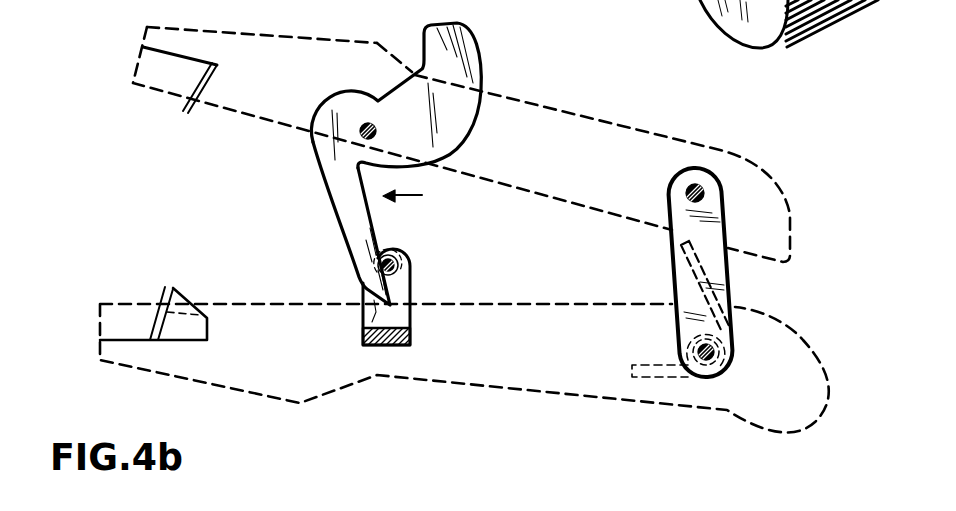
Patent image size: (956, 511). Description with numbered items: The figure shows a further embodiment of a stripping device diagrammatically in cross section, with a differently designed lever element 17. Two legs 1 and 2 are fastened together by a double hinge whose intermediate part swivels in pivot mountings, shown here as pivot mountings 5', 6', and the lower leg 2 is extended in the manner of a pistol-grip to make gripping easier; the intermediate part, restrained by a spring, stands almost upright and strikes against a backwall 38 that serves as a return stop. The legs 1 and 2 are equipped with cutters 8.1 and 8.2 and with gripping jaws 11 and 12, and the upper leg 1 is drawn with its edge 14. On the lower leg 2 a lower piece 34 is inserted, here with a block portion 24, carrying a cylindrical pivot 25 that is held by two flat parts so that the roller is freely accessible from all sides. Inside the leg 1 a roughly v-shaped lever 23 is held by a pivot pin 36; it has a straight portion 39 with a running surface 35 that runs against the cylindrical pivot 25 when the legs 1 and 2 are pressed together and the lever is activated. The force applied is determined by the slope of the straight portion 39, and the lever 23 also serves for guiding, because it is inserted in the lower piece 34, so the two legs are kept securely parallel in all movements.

The leg 1 is at (604, 127).
The lower leg 2 is at (514, 381).
The upper pivot pin 5' is at (660, 190).
The lower pivot pin 6' is at (728, 352).
The cutter 8.1 is at (193, 108).
The cutter 8.2 is at (163, 298).
The gripping jaw 11 is at (178, 83).
The gripping jaw 12 is at (122, 322).
The upper body edge 14 is at (243, 12).
The lever element 17 is at (422, 195).
The v-shaped lever 23 is at (473, 43).
The stop block 24 is at (397, 303).
The cylindrical pivot 25 is at (400, 261).
The lower piece 34 is at (412, 336).
The running surface 35 is at (375, 232).
The pivot pin 36 is at (376, 126).
The backwall 38 is at (686, 268).
The straight portion 39 is at (332, 190).